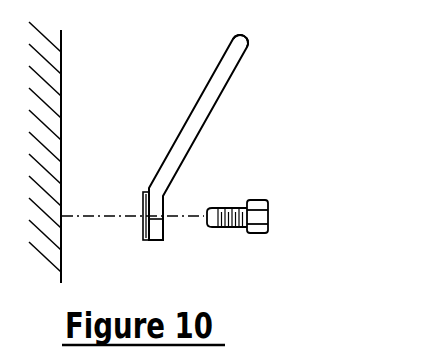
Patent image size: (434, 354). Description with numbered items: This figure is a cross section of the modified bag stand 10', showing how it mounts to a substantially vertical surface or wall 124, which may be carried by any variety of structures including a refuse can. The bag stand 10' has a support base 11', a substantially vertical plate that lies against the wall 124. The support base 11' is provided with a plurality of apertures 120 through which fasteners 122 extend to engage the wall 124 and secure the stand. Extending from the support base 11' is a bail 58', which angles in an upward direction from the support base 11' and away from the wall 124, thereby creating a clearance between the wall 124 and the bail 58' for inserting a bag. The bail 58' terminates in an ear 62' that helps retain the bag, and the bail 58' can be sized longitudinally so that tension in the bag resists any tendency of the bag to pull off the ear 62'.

The modified bag stand 10' is at (358, 51).
The support base 11' is at (126, 245).
The bail 58' is at (229, 137).
The ear 62' is at (188, 51).
The aperture 120 is at (163, 221).
The fastener 122 is at (228, 208).
The wall 124 is at (61, 105).